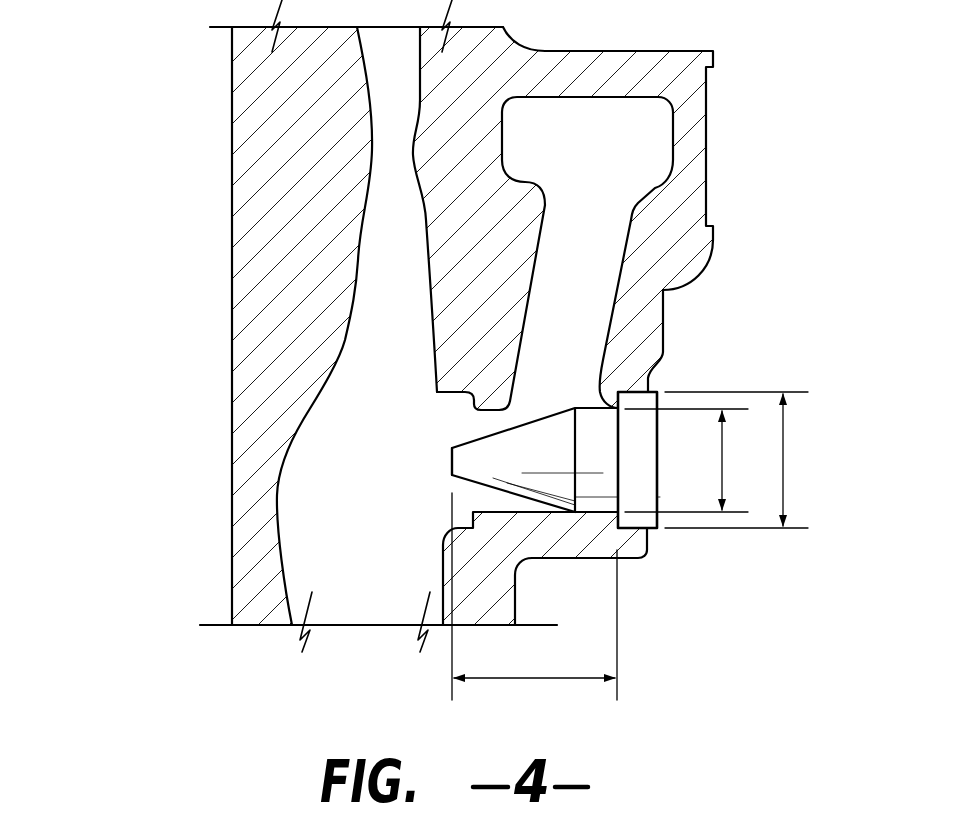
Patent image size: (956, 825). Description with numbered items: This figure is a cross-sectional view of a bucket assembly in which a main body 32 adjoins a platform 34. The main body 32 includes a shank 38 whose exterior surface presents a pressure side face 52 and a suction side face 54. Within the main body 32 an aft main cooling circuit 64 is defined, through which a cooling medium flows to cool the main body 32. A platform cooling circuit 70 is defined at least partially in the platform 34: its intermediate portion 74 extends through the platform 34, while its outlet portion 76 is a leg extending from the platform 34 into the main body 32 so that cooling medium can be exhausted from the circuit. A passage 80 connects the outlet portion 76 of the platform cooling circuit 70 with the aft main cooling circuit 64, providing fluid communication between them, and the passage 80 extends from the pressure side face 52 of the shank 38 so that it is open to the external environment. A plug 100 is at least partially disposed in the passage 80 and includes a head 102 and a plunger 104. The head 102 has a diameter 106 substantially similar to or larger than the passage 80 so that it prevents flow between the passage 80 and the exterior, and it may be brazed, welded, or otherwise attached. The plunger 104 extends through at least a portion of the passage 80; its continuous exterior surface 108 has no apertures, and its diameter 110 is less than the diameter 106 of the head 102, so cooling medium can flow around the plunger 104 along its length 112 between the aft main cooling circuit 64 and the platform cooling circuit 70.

The main body 32 is at (147, 103).
The shank 38 is at (220, 110).
The aft main cooling circuit 64 is at (385, 212).
The suction side face 54 is at (233, 322).
The platform 34 is at (722, 82).
The intermediate portion 74 is at (638, 127).
The platform cooling circuit 70 is at (633, 218).
The outlet portion 76 is at (595, 248).
The pressure side face 52 is at (665, 303).
The plunger 104 is at (555, 433).
The plug 100 is at (672, 433).
The diameter 106 is at (783, 445).
The diameter 110 is at (722, 453).
The exterior surface 108 is at (472, 440).
The passage 80 is at (465, 500).
The head 102 is at (660, 497).
The length 112 is at (562, 680).